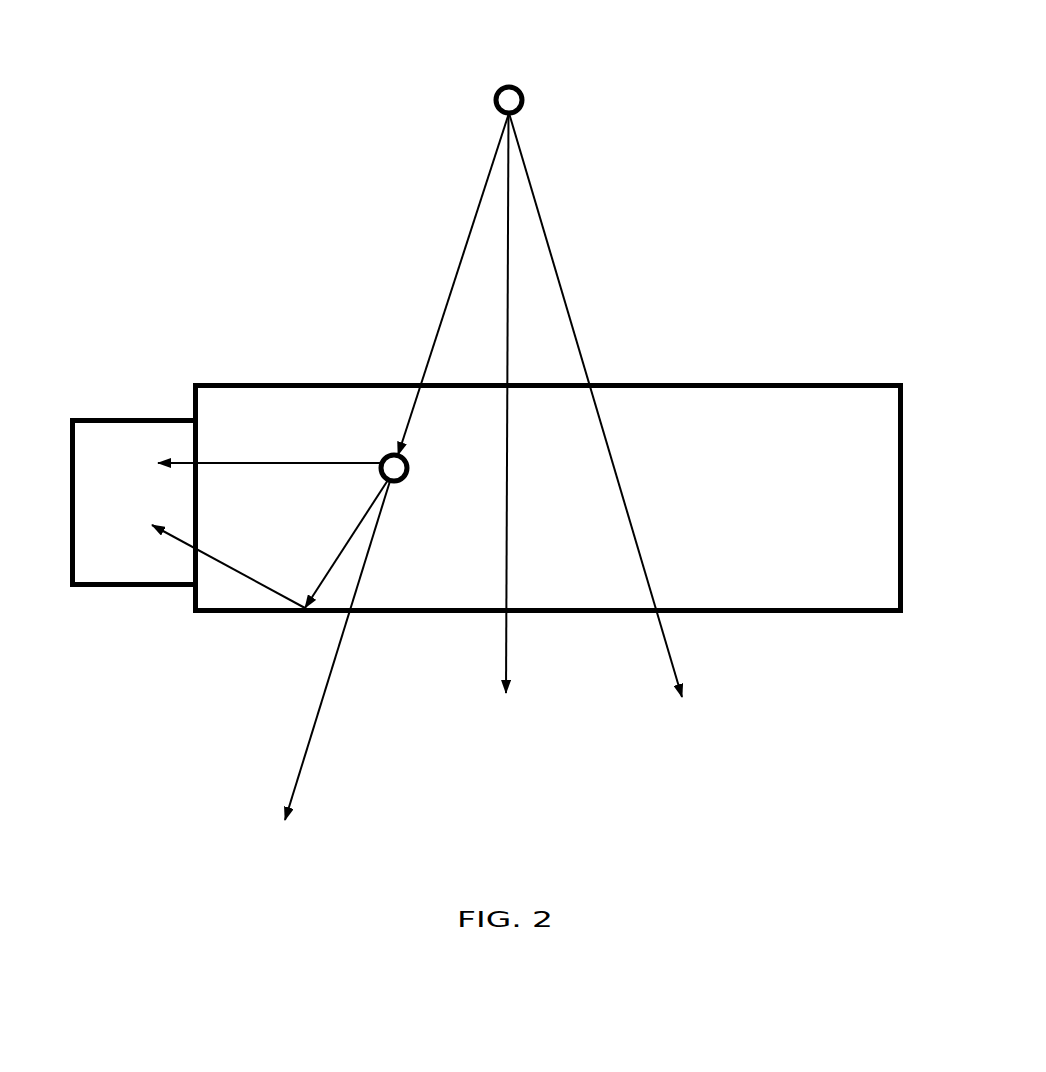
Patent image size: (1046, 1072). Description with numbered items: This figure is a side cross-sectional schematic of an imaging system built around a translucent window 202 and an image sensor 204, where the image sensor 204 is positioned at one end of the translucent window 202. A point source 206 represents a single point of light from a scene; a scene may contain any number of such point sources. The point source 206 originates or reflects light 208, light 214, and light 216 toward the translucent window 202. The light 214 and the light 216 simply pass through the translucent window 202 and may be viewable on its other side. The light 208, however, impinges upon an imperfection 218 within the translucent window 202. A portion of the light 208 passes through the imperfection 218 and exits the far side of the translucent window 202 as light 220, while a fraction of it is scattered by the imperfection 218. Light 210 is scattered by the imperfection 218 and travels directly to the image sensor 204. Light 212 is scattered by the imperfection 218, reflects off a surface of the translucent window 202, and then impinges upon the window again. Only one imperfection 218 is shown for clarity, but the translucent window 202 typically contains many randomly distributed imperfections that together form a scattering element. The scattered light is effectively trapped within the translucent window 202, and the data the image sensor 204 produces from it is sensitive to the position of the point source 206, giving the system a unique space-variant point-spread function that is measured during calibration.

The translucent window 202 is at (860, 415).
The image sensor 204 is at (116, 445).
The point source 206 is at (496, 96).
The light 208 is at (445, 305).
The light 210 is at (265, 462).
The light 212 is at (243, 575).
The light 214 is at (508, 230).
The light 216 is at (568, 300).
The imperfection 218 is at (394, 466).
The light 220 is at (297, 782).